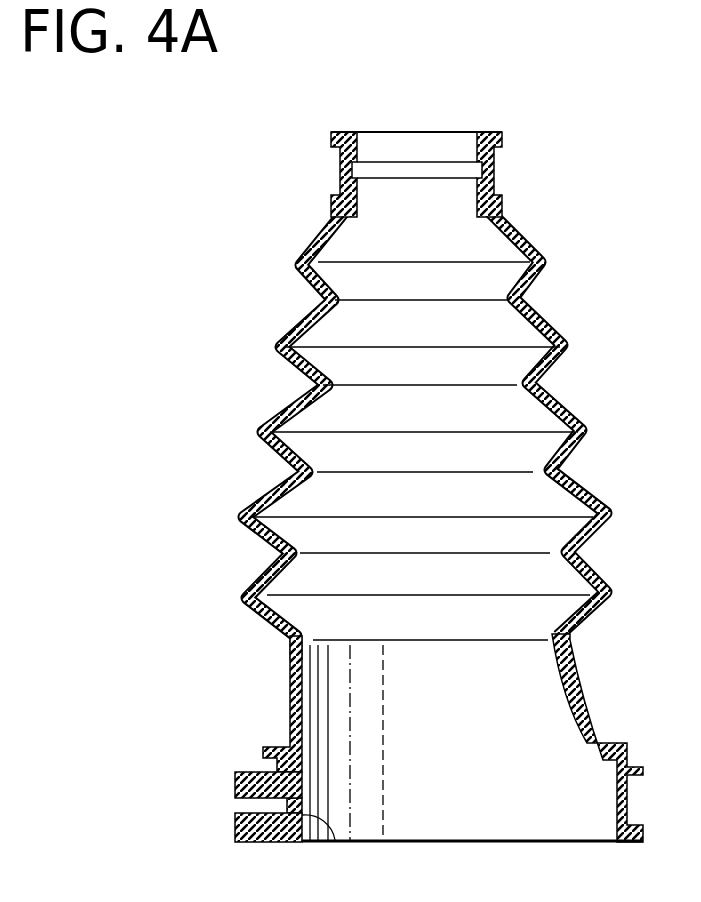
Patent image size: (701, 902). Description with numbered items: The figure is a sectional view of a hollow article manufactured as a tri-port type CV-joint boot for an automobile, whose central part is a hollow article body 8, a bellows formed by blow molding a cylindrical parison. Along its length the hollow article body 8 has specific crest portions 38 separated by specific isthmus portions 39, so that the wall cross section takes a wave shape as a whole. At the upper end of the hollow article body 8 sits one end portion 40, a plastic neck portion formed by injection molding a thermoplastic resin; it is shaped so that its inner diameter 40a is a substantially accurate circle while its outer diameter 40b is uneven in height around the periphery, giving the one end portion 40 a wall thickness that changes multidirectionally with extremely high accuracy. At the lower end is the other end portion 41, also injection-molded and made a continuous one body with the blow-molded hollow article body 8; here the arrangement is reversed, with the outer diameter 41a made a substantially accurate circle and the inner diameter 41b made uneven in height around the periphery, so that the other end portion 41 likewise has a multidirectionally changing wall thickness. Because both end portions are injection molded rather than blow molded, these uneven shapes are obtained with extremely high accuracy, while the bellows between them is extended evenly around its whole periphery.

The hollow article body 8 is at (300, 241).
The crest portion 38 is at (545, 254).
The isthmus portion 39 is at (510, 300).
The one end portion 40 is at (420, 141).
The inner diameter 40a is at (478, 141).
The outer diameter 40b is at (331, 137).
The other end portion 41 is at (235, 786).
The outer diameter 41a is at (235, 830).
The inner diameter 41b is at (335, 841).